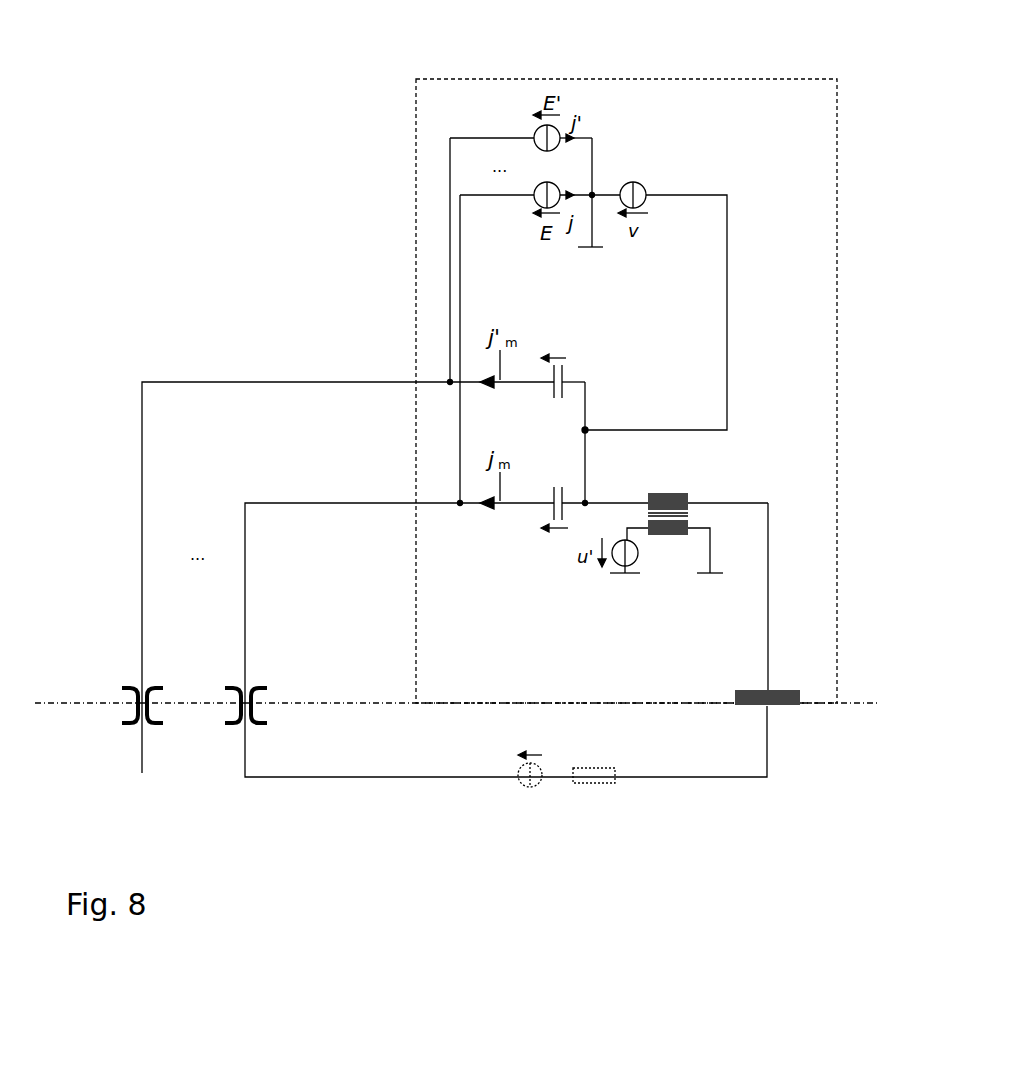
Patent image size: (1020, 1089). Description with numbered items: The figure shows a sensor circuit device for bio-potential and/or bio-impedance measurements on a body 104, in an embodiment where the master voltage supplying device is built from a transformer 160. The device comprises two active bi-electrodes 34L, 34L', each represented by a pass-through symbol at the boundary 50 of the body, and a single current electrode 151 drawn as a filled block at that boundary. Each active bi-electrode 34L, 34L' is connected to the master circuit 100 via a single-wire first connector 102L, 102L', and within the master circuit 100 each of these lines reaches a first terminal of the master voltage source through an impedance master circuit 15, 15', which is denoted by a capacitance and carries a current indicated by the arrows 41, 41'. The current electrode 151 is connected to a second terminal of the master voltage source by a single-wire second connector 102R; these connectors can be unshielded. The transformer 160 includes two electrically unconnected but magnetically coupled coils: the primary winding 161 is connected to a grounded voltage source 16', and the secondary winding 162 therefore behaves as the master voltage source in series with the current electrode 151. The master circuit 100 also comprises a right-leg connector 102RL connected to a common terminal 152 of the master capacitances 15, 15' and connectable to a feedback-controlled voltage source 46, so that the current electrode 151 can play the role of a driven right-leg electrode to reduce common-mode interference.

The master circuit 100 is at (707, 78).
The feedback-controlled voltage source 46 is at (643, 185).
The right-leg connector 102RL is at (728, 278).
The single-wire first connector 102L' is at (348, 548).
The single-wire first connector 102L is at (506, 612).
The second current arrow/capacitor terminal 41' is at (565, 322).
The impedance master circuit 15' is at (595, 340).
The common terminal 152 is at (589, 427).
The transformer 160 is at (692, 478).
The secondary winding 162 is at (665, 492).
The primary winding 161 is at (673, 537).
The single-wire second connector 102R is at (754, 501).
The impedance master circuit 15 is at (540, 523).
The current arrow/capacitor terminal 41 is at (525, 583).
The voltage source 16' is at (589, 579).
The current electrode 151 is at (775, 689).
The active bi-electrode 34L' is at (165, 671).
The active bi-electrode 34L is at (269, 671).
The patient / boundary line 50 is at (364, 701).
The body 104 is at (665, 775).